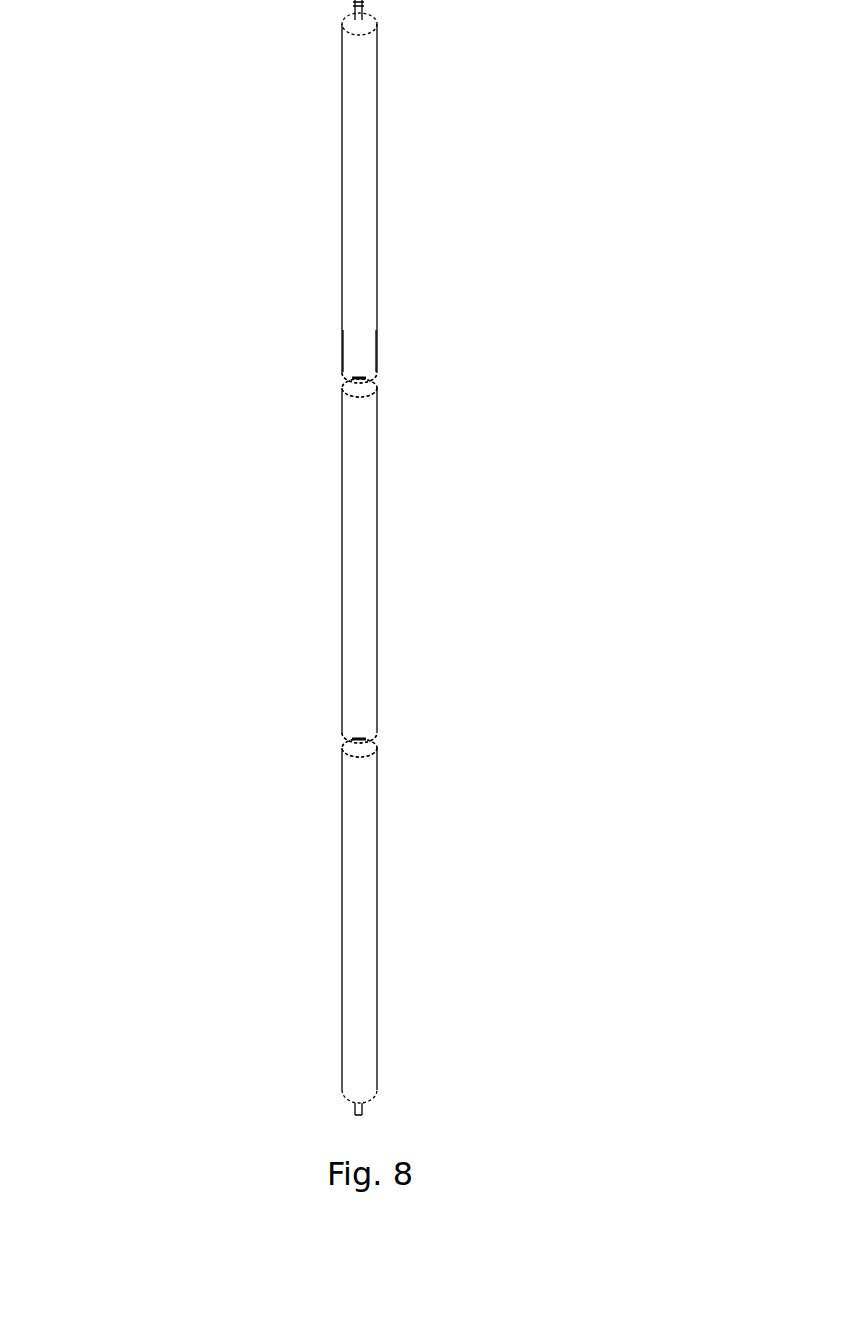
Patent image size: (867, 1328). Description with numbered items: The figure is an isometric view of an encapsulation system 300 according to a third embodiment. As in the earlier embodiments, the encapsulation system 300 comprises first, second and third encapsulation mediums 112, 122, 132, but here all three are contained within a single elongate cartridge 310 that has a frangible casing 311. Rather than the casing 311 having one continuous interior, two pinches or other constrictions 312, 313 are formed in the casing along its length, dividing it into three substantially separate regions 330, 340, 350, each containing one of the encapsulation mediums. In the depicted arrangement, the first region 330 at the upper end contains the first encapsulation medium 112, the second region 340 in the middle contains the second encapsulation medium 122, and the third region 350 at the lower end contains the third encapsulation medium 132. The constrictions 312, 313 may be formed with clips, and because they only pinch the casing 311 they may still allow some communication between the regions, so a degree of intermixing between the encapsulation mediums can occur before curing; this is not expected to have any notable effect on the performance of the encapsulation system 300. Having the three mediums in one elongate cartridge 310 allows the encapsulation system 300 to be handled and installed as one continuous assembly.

The encapsulation system 300 is at (143, 162).
The cartridge 310 is at (202, 517).
The frangible casing 311 is at (337, 343).
The constriction 312 is at (372, 378).
The constriction 313 is at (372, 738).
The first region 330 is at (537, 144).
The second region 340 is at (415, 514).
The third region 350 is at (535, 859).
The first encapsulation medium 112 is at (362, 302).
The second encapsulation medium 122 is at (370, 627).
The third encapsulation medium 132 is at (360, 1023).